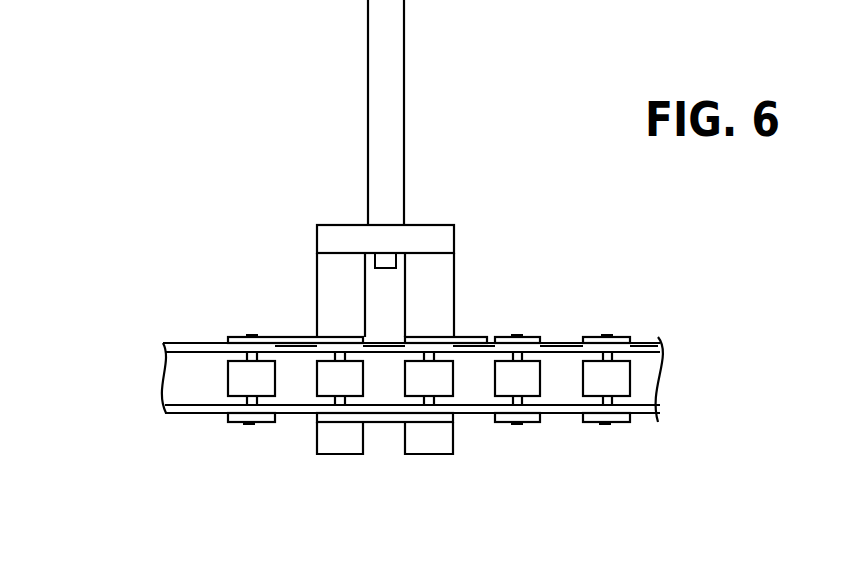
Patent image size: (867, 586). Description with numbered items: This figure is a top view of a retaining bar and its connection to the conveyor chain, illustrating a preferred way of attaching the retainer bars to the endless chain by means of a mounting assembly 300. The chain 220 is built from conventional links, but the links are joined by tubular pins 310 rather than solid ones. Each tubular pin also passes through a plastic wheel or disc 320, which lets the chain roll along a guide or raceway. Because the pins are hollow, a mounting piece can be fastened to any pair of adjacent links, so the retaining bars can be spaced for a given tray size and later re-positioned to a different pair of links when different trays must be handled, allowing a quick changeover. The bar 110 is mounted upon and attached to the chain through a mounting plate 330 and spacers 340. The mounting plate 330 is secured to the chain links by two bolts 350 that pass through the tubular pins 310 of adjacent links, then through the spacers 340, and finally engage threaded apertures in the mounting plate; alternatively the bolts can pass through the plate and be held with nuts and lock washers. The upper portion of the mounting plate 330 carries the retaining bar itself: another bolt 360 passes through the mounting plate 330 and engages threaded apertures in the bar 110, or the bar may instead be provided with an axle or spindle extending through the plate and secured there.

The bar 110 is at (405, 88).
The chain 220 is at (272, 421).
The mounting assembly 300 is at (262, 96).
The tubular pins 310 is at (250, 337).
The plastic wheel or disc 320 is at (237, 382).
The mounting plate 330 is at (456, 233).
The spacers 340 is at (317, 290).
The bolts 350 is at (335, 455).
The bolt 360 is at (386, 258).